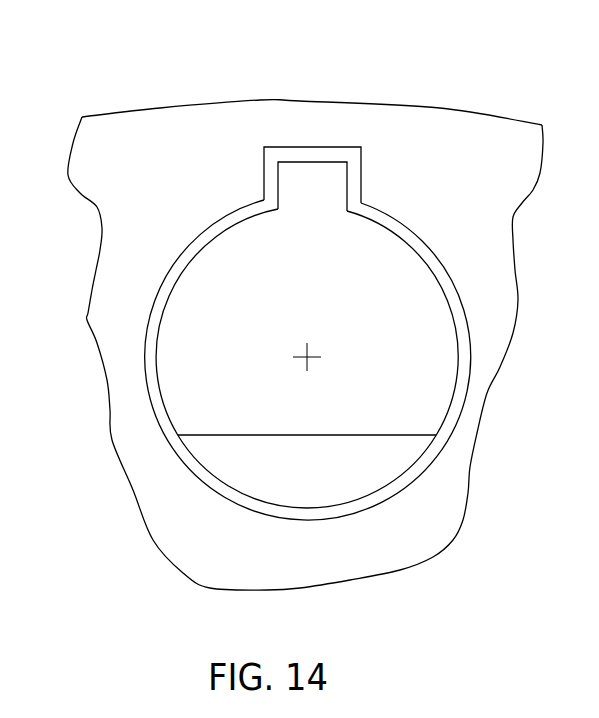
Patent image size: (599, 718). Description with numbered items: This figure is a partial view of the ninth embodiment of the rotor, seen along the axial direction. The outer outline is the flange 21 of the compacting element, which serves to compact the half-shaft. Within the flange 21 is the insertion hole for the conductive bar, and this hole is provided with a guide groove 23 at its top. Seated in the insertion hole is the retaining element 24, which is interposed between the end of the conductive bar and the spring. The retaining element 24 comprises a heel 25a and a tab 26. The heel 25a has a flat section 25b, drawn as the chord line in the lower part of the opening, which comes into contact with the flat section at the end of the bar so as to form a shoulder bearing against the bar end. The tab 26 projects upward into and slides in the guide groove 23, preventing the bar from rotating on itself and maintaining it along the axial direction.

The flange 21 is at (515, 290).
The guide groove 23 is at (316, 147).
The retaining element 24 is at (227, 317).
The heel 25a is at (302, 458).
The flat section 25b is at (405, 432).
The tab 26 is at (317, 183).